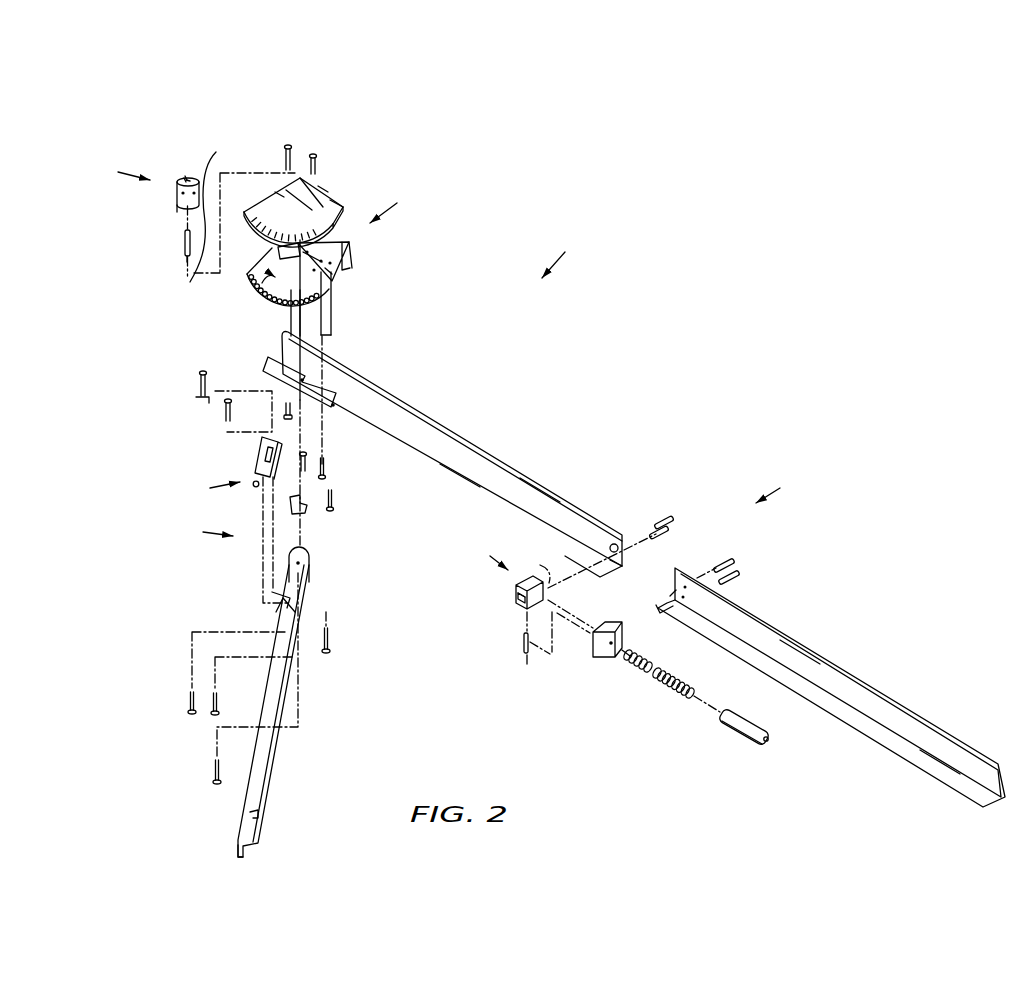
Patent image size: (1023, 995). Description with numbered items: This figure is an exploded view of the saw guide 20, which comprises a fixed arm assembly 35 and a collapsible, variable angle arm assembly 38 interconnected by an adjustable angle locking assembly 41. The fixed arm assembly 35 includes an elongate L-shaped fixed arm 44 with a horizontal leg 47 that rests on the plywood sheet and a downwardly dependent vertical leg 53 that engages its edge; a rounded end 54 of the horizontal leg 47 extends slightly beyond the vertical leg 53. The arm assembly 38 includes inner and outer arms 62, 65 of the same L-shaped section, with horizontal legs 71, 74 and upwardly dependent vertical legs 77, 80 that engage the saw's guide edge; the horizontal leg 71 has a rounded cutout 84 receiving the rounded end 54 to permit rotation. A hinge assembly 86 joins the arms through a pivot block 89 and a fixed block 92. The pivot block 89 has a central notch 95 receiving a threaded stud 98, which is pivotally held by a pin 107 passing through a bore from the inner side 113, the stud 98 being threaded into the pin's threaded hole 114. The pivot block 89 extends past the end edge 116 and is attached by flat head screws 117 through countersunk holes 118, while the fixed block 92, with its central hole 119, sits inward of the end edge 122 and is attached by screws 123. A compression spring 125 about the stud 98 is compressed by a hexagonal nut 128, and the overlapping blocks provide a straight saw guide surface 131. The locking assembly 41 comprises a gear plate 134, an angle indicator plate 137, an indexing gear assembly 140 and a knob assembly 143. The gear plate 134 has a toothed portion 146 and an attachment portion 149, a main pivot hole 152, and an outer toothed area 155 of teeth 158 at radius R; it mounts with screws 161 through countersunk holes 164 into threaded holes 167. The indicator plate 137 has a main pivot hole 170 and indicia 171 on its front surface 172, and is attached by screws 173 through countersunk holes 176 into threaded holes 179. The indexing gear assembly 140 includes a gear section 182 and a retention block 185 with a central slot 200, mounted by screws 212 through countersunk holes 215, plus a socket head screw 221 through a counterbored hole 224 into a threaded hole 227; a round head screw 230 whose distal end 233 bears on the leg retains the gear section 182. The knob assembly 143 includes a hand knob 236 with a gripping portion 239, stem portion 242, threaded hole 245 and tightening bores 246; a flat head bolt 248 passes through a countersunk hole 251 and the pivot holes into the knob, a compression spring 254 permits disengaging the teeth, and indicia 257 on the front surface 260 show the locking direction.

The saw guide 20 is at (569, 256).
The fixed arm assembly 35 is at (199, 525).
The variable angle arm assembly 38 is at (785, 485).
The adjustable angle locking assembly 41 is at (402, 204).
The fixed arm 44 is at (286, 744).
The horizontal leg 47 is at (261, 814).
The vertical leg 53 is at (238, 853).
The rounded end 54 is at (310, 553).
The inner arm 62 is at (453, 428).
The outer arm 65 is at (879, 682).
The horizontal leg 71 is at (462, 477).
The horizontal leg 74 is at (940, 763).
The vertical leg 77 is at (524, 490).
The vertical leg 80 is at (793, 655).
The rounded cutout 84 is at (350, 390).
The hinge assembly 86 is at (482, 553).
The pivot block 89 is at (513, 585).
The fixed block 92 is at (594, 658).
The central notch 95 is at (519, 599).
The threaded stud 98 is at (728, 683).
The pin 107 is at (526, 656).
The inner side 113 is at (540, 566).
The threaded hole 114 is at (523, 644).
The end edge 116 is at (620, 583).
The flat head screws 117 is at (662, 540).
The countersunk holes 118 is at (614, 544).
The central hole 119 is at (614, 643).
The end edge 122 is at (662, 602).
The flat head screws 123 is at (740, 574).
The compression spring 125 is at (629, 668).
The hexagonal nut 128 is at (741, 727).
The saw guide surface 131 is at (676, 590).
The gear plate 134 is at (354, 267).
The angle indicator plate 137 is at (327, 185).
The indexing gear assembly 140 is at (201, 492).
The knob assembly 143 is at (172, 208).
The toothed portion 146 is at (271, 298).
The attachment portion 149 is at (281, 251).
The main pivot hole 152 is at (332, 280).
The outer toothed area 155 is at (367, 303).
The teeth 158 is at (262, 366).
The flat head screws 161 is at (306, 462).
The countersunk holes 164 is at (300, 378).
The threaded holes 167 is at (305, 252).
The main pivot hole 170 is at (279, 193).
The indicia 171 is at (293, 212).
The front surface 172 is at (324, 206).
The flat head screws 173 is at (317, 163).
The countersunk holes 176 is at (290, 195).
The threaded holes 179 is at (331, 268).
The gear section 182 is at (308, 511).
The gear section retention block 185 is at (254, 488).
The central slot 200 is at (256, 455).
The flat head screws 212 is at (213, 780).
The countersunk holes 215 is at (290, 607).
The socket head screw 221 is at (224, 407).
The counterbored hole 224 is at (260, 440).
The threaded hole 227 is at (290, 597).
The round head screw 230 is at (199, 378).
The distal end 233 is at (199, 401).
The hand knob 236 is at (108, 173).
The gripping portion 239 is at (176, 194).
The stem portion 242 is at (184, 242).
The threaded hole 245 is at (186, 178).
The tightening bores 246 is at (189, 262).
The flat head bolt 248 is at (333, 650).
The countersunk hole 251 is at (300, 563).
The compression spring 254 is at (190, 222).
The indicia 257 is at (218, 203).
The front surface 260 is at (184, 178).
The radius R is at (318, 330).